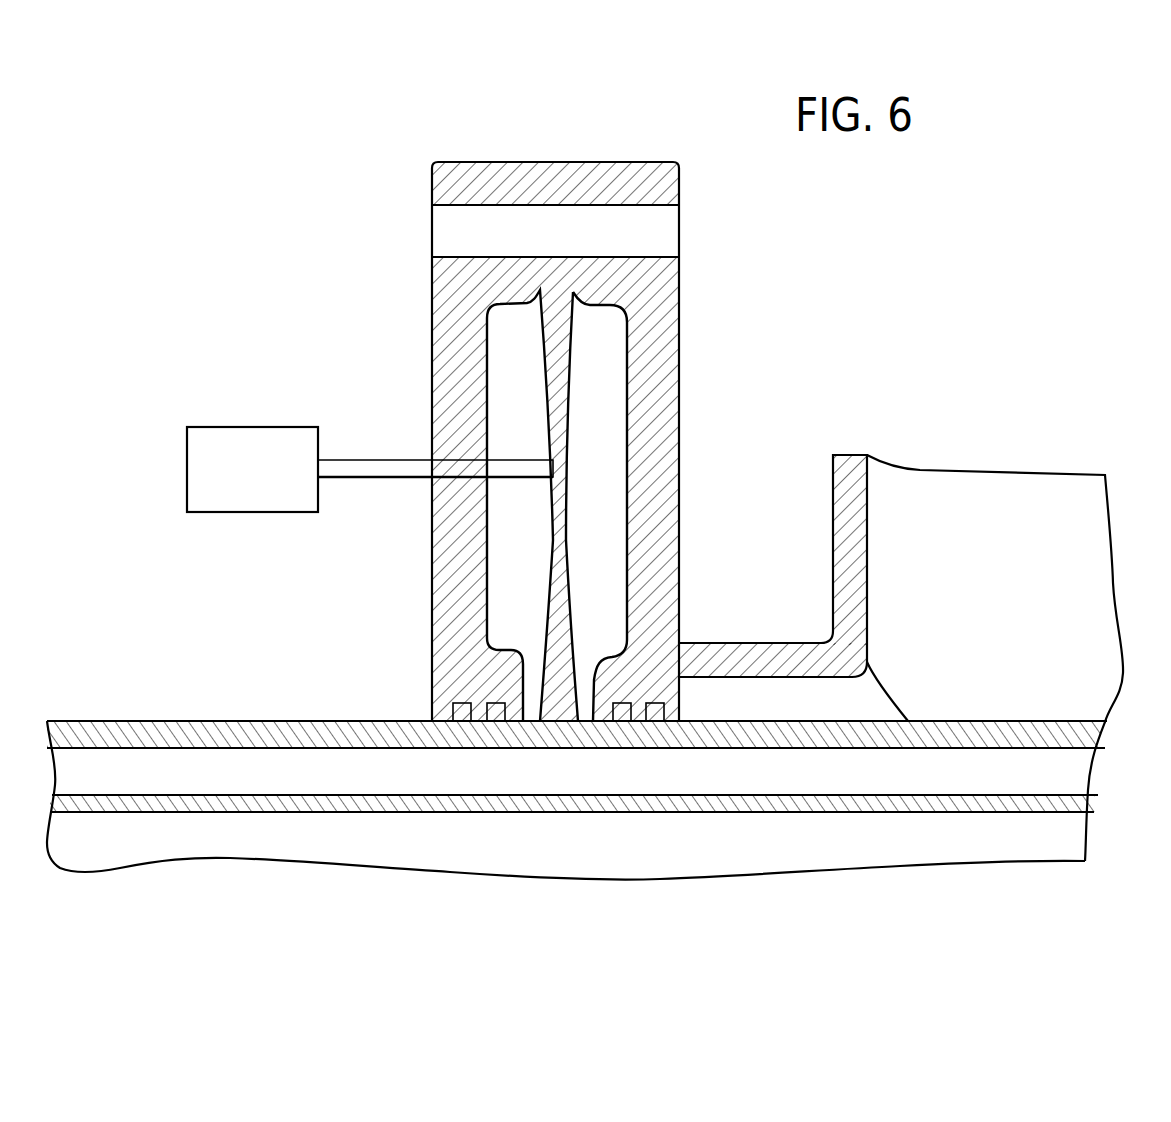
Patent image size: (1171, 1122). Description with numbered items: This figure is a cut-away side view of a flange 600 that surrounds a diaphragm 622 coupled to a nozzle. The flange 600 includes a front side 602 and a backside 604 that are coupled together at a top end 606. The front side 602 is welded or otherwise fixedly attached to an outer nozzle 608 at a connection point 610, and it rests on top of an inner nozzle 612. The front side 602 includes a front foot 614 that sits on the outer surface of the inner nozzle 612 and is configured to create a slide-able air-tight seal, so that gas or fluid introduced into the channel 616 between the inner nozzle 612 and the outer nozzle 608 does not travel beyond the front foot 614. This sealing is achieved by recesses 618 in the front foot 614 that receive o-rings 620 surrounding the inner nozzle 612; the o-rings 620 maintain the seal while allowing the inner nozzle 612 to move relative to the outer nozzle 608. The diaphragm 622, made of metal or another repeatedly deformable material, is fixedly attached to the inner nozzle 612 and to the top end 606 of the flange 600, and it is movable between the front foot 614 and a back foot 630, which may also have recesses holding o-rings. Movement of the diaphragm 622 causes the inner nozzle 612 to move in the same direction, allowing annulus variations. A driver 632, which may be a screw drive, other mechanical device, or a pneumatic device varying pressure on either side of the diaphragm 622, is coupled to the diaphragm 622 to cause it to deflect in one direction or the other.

The flange 600 is at (660, 363).
The front side 602 is at (680, 453).
The backside 604 is at (420, 391).
The top end 606 is at (560, 136).
The outer nozzle 608 is at (748, 643).
The connection point 610 is at (690, 634).
The inner nozzle 612 is at (153, 721).
The front foot 614 is at (640, 680).
The channel 616 is at (840, 655).
The recesses 618 is at (620, 700).
The o-rings 620 is at (680, 699).
The diaphragm 622 is at (572, 342).
The back foot 630 is at (450, 692).
The driver 632 is at (248, 512).